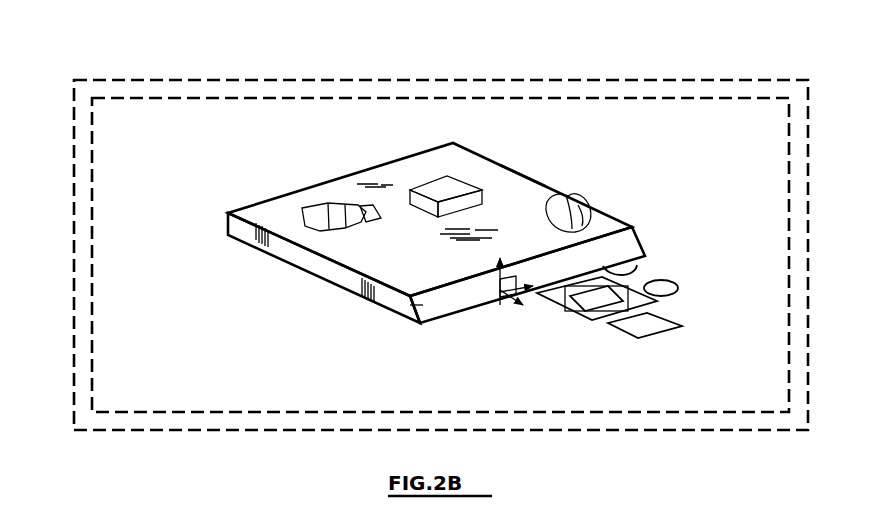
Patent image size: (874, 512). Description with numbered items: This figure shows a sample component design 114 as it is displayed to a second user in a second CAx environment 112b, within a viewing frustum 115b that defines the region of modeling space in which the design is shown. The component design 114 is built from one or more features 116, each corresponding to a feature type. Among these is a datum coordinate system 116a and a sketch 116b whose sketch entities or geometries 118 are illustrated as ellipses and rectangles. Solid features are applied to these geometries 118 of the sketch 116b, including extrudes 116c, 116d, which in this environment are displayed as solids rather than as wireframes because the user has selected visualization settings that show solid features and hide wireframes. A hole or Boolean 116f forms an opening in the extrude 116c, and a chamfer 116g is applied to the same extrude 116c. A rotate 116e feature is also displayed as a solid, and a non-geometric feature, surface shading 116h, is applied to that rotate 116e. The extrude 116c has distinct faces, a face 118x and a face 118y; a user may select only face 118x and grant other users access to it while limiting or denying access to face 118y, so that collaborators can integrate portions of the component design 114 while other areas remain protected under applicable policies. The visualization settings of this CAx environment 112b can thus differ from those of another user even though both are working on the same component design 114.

The second CAx environment 112b is at (220, 78).
The viewing frustum 115b is at (126, 96).
The component design 114 is at (213, 169).
The sketch entities or geometries 118 is at (443, 320).
The face 118x is at (244, 230).
The face 118y is at (263, 213).
The hole or Boolean 116f is at (340, 203).
The extrude 116d is at (457, 185).
The extrude 116c is at (522, 173).
The surface shading 116h is at (541, 194).
The rotate 116e is at (585, 213).
The features 116 is at (623, 264).
The sketch 116b is at (698, 297).
The chamfer 116g is at (420, 305).
The datum coordinate system 116a is at (497, 284).